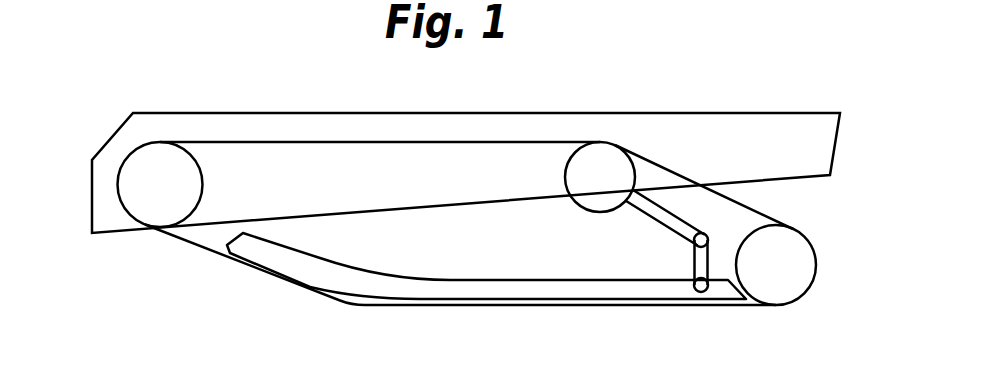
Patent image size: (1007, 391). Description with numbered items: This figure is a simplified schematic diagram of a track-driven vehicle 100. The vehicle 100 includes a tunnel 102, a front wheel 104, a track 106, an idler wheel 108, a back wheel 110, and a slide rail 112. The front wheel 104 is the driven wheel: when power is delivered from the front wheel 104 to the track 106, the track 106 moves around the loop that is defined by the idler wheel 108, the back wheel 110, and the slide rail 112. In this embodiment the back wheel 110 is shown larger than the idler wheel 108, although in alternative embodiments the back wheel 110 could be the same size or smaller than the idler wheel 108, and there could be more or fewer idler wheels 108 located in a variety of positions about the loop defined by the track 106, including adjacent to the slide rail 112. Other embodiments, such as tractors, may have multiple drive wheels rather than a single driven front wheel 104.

The vehicle 100 is at (832, 94).
The tunnel 102 is at (273, 112).
The front wheel 104 is at (138, 167).
The track 106 is at (408, 142).
The idler wheel 108 is at (600, 154).
The back wheel 110 is at (780, 285).
The slide rail 112 is at (537, 300).